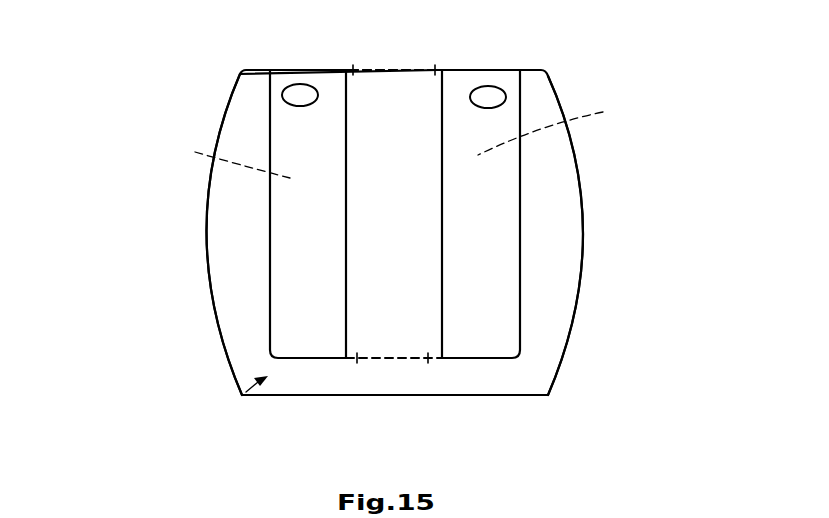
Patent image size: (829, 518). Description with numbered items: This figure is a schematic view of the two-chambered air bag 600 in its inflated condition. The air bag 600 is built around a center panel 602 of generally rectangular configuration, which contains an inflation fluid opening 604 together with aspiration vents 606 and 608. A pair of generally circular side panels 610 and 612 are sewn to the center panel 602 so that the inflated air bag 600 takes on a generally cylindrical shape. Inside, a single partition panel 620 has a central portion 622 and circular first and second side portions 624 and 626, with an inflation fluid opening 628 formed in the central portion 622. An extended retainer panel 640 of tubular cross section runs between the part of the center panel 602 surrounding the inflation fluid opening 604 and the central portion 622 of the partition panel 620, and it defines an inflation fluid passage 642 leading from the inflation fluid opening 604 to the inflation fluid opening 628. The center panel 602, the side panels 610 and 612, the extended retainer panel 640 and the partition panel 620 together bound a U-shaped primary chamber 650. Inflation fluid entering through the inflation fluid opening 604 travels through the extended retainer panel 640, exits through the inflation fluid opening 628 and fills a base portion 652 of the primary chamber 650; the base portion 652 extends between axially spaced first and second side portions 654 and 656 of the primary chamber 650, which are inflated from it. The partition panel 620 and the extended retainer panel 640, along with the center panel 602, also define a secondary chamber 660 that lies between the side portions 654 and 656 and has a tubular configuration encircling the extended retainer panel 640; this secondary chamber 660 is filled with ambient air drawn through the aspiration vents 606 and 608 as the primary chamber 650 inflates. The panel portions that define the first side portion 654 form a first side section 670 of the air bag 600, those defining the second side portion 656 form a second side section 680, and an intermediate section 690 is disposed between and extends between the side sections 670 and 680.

The air bag 600 is at (132, 169).
The center panel 602 is at (285, 396).
The inflation fluid opening 604 is at (403, 70).
The aspiration vent 606 is at (306, 84).
The aspiration vent 608 is at (488, 86).
The side panel 610 is at (207, 198).
The side panel 612 is at (582, 200).
The partition panel 620 is at (254, 306).
The central portion 622 is at (310, 357).
The first side portion 624 is at (270, 138).
The second side portion 626 is at (520, 296).
The inflation fluid opening 628 is at (383, 358).
The extended retainer panel 640 is at (460, 274).
The inflation fluid passage 642 is at (400, 207).
The primary chamber 650 is at (240, 397).
The base portion 652 is at (478, 398).
The first side portion 654 is at (225, 263).
The second side portion 656 is at (566, 250).
The secondary chamber 660 is at (397, 136).
The first side section 670 is at (212, 392).
The second side section 680 is at (570, 388).
The intermediate section 690 is at (383, 412).